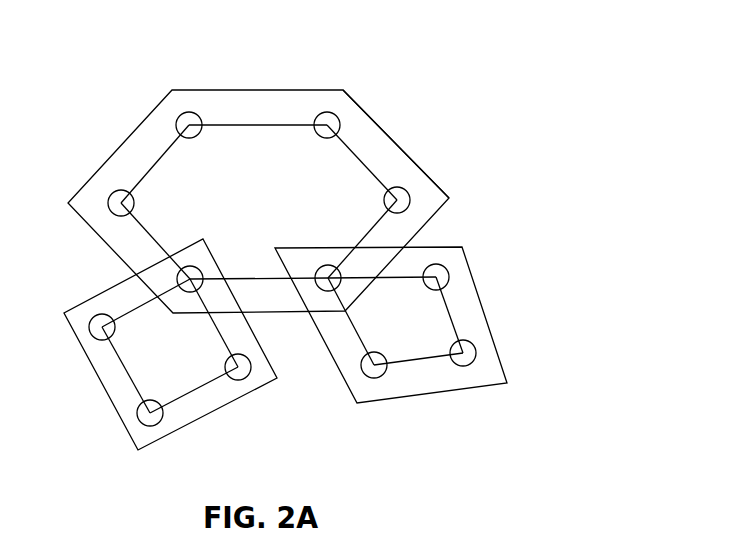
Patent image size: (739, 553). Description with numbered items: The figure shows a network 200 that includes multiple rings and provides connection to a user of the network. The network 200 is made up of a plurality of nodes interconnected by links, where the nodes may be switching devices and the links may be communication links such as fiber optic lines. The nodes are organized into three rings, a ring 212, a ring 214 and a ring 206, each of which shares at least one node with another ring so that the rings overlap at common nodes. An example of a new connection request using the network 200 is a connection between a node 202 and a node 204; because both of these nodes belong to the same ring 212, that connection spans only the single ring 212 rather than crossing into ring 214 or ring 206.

The network 200 is at (468, 47).
The node 202 is at (425, 176).
The node 204 is at (357, 101).
The ring 206 is at (127, 427).
The ring 212 is at (453, 195).
The ring 214 is at (488, 323).